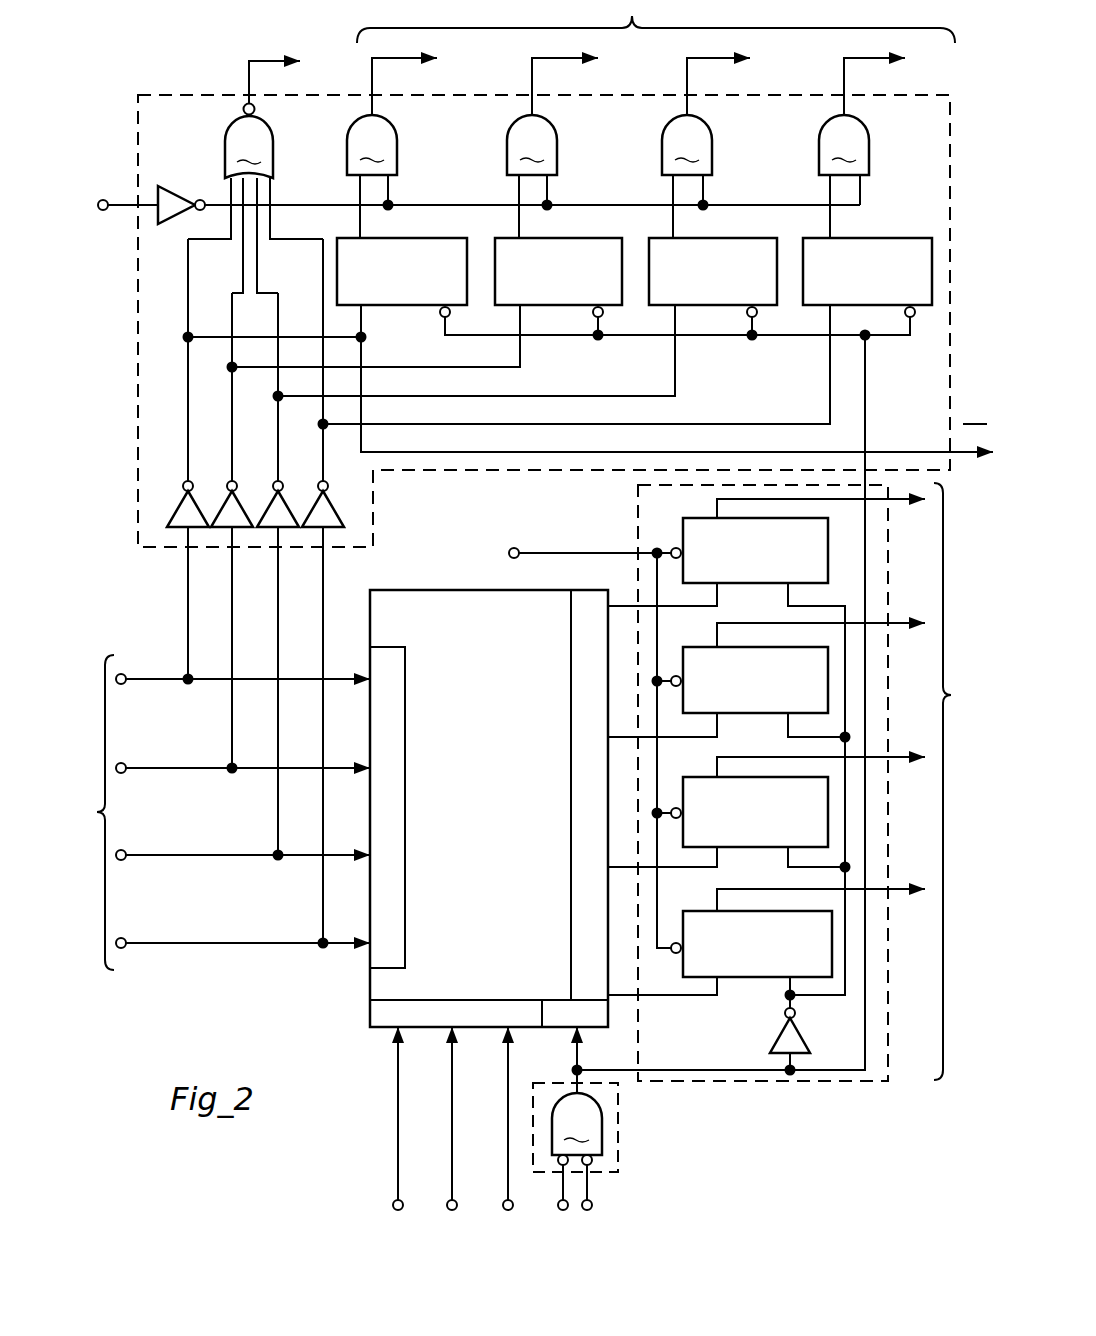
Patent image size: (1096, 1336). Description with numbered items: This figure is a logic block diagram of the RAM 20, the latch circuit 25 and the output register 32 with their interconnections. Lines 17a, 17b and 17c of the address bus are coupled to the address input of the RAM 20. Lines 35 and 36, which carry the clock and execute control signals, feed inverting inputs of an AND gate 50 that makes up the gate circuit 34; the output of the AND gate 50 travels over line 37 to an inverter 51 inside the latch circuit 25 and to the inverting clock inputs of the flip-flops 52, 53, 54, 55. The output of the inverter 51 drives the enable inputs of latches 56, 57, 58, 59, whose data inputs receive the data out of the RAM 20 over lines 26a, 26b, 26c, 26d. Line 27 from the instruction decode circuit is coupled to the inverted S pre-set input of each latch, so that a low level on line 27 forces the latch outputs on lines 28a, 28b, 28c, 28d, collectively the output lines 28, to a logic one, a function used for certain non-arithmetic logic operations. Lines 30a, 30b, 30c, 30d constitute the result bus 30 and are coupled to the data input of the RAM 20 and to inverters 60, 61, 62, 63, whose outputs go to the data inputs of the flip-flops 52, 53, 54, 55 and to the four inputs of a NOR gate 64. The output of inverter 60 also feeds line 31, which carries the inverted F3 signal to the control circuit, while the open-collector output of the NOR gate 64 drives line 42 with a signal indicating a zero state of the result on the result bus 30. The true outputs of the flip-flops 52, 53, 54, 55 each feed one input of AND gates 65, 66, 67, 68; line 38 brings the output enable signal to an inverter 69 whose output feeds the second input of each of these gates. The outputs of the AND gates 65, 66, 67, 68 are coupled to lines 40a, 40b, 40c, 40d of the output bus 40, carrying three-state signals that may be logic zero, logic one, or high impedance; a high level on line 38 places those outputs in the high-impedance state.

The address bus line 17a is at (398, 1122).
The address bus line 17b is at (452, 1122).
The address bus line 17c is at (508, 1122).
The random access memory 20 is at (502, 849).
The latch circuit 25 is at (798, 1082).
The data out line 26a is at (722, 985).
The data out line 26b is at (722, 857).
The data out line 26c is at (722, 727).
The data out line 26d is at (722, 597).
The pre-set line 27 is at (560, 552).
The latch output lines 28 is at (957, 781).
The latch output line 28a is at (903, 892).
The latch output line 28b is at (903, 760).
The latch output line 28c is at (903, 626).
The latch output line 28d is at (903, 502).
The result bus 30 is at (86, 810).
The result bus line 30a is at (150, 945).
The result bus line 30b is at (146, 857).
The result bus line 30c is at (140, 770).
The result bus line 30d is at (140, 681).
The F3-bar line 31 is at (363, 357).
The output register 32 is at (373, 490).
The gate circuit 34 is at (618, 1146).
The clock line 35 is at (559, 1188).
The execute line 36 is at (591, 1186).
The gate output line 37 is at (680, 1070).
The output enable line 38 is at (120, 208).
The output bus 40 is at (656, 21).
The output bus line 40a is at (852, 60).
The output bus line 40b is at (695, 60).
The output bus line 40c is at (540, 60).
The output bus line 40d is at (380, 60).
The zero output line 42 is at (252, 61).
The AND gate 50 is at (577, 1129).
The inverter 51 is at (808, 1042).
The flip-flop 52 is at (890, 237).
The flip-flop 53 is at (735, 237).
The flip-flop 54 is at (580, 237).
The flip-flop 55 is at (422, 237).
The latch 56 is at (705, 913).
The latch 57 is at (683, 783).
The latch 58 is at (683, 652).
The latch 59 is at (683, 526).
The inverter 60 is at (331, 485).
The inverter 61 is at (286, 485).
The inverter 62 is at (240, 485).
The inverter 63 is at (196, 485).
The NOR gate 64 is at (249, 141).
The AND gate 65 is at (844, 145).
The AND gate 66 is at (687, 145).
The AND gate 67 is at (532, 145).
The AND gate 68 is at (372, 145).
The inverter 69 is at (176, 198).